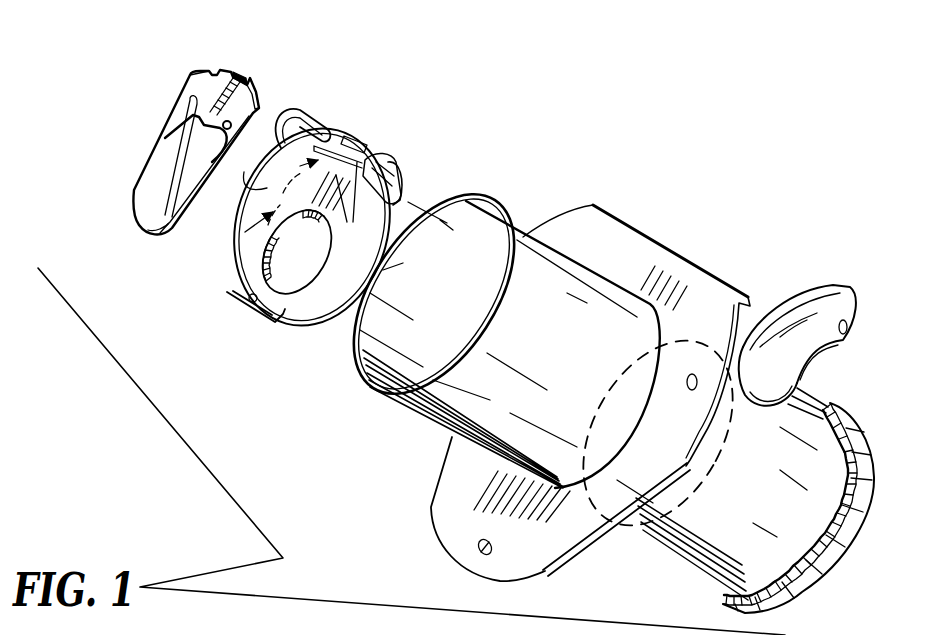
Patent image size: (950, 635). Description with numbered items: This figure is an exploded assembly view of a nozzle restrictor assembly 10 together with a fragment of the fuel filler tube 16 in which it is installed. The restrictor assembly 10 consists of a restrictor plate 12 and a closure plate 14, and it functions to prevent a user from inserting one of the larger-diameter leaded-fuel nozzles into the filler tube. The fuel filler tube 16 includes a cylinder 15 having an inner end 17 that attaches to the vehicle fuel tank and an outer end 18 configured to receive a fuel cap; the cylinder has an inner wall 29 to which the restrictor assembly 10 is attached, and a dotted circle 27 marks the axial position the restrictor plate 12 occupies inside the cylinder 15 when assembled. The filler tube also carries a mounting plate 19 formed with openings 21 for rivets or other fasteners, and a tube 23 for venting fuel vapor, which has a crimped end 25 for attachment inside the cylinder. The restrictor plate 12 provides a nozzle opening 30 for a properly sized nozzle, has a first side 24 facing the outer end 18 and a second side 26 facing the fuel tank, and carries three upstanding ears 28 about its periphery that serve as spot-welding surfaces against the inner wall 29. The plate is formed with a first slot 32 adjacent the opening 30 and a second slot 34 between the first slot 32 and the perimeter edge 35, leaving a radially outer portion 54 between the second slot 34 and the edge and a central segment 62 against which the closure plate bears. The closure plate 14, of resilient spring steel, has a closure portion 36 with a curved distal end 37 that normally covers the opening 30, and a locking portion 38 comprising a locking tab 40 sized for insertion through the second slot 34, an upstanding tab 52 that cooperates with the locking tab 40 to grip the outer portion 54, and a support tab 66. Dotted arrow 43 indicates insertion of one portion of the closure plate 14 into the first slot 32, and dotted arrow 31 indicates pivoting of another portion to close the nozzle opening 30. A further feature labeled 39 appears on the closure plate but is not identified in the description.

The nozzle restrictor assembly 10 is at (395, 58).
The restrictor plate 12 is at (390, 132).
The closure plate 14 is at (252, 64).
The cylinder 15 is at (391, 433).
The fuel filler tube 16 is at (612, 194).
The inner end 17 is at (833, 538).
The outer end 18 is at (524, 233).
The mounting plate 19 is at (566, 565).
The openings 21 is at (696, 333).
The tube 23 is at (803, 310).
The first side 24 is at (255, 190).
The crimped end 25 is at (750, 380).
The second side 26 is at (398, 187).
The dotted circle 27 is at (708, 466).
The upstanding ears 28 is at (293, 112).
The inner wall 29 is at (372, 352).
The nozzle opening 30 is at (330, 277).
The dotted arrow 31 is at (413, 260).
The first slot 32 is at (346, 204).
The second slot 34 is at (383, 128).
The perimeter edge 35 is at (386, 148).
The closure portion 36 is at (137, 196).
The curved distal end 37 is at (165, 235).
The locking portion 38 is at (200, 62).
The latch 39 is at (181, 108).
The locking tab 40 is at (251, 80).
The dotted arrow 43 is at (228, 233).
The upstanding tab 52 is at (225, 71).
The radially outer portion 54 is at (357, 140).
The central segment 62 is at (330, 143).
The support tab 66 is at (233, 129).